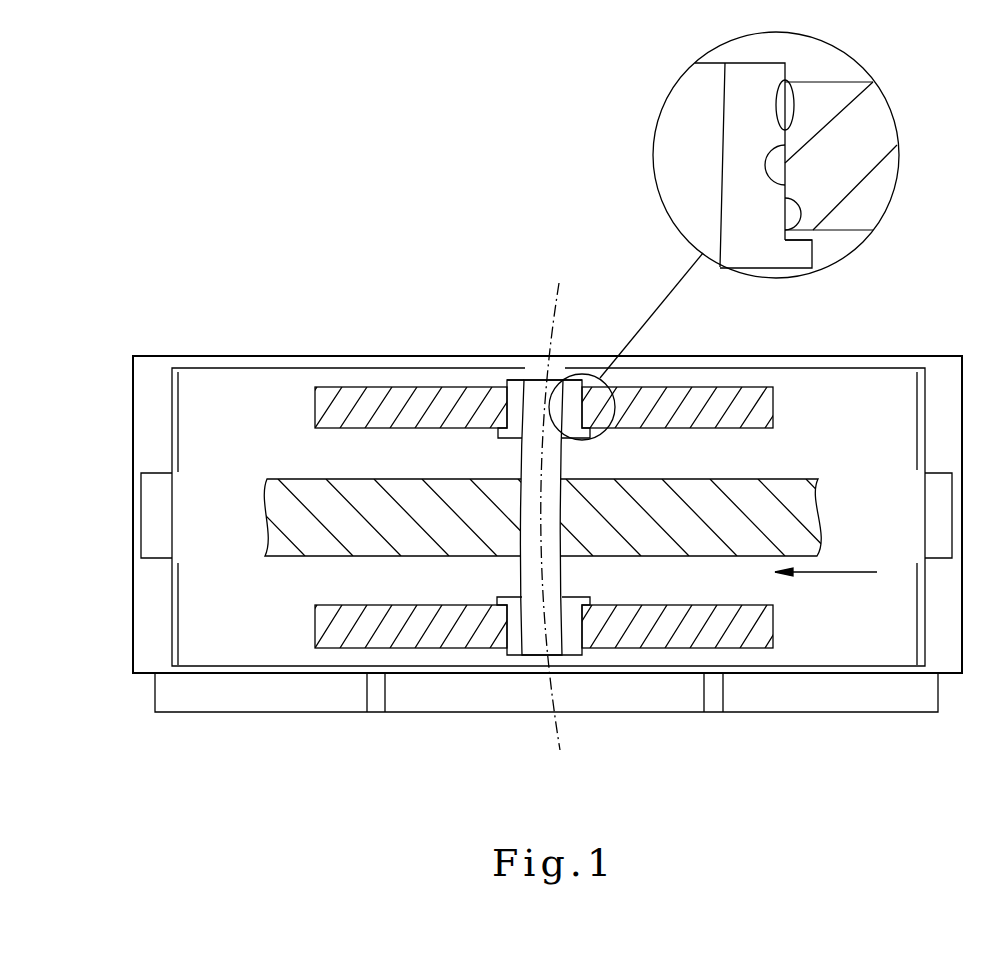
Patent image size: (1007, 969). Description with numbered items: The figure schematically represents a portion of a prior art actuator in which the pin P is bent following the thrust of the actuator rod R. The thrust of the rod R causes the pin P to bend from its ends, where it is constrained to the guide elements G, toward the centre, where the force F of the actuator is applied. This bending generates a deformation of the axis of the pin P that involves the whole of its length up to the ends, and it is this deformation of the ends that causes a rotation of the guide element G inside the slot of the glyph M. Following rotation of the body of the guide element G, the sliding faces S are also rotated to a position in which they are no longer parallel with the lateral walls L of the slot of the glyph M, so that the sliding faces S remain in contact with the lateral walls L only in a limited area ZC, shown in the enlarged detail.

The glyph M is at (280, 402).
The actuator rod R is at (760, 492).
The pin P is at (673, 145).
The guide elements G is at (505, 375).
The limited area ZC is at (797, 100).
The lateral walls L is at (787, 147).
The sliding faces S is at (787, 237).
The force F is at (826, 584).